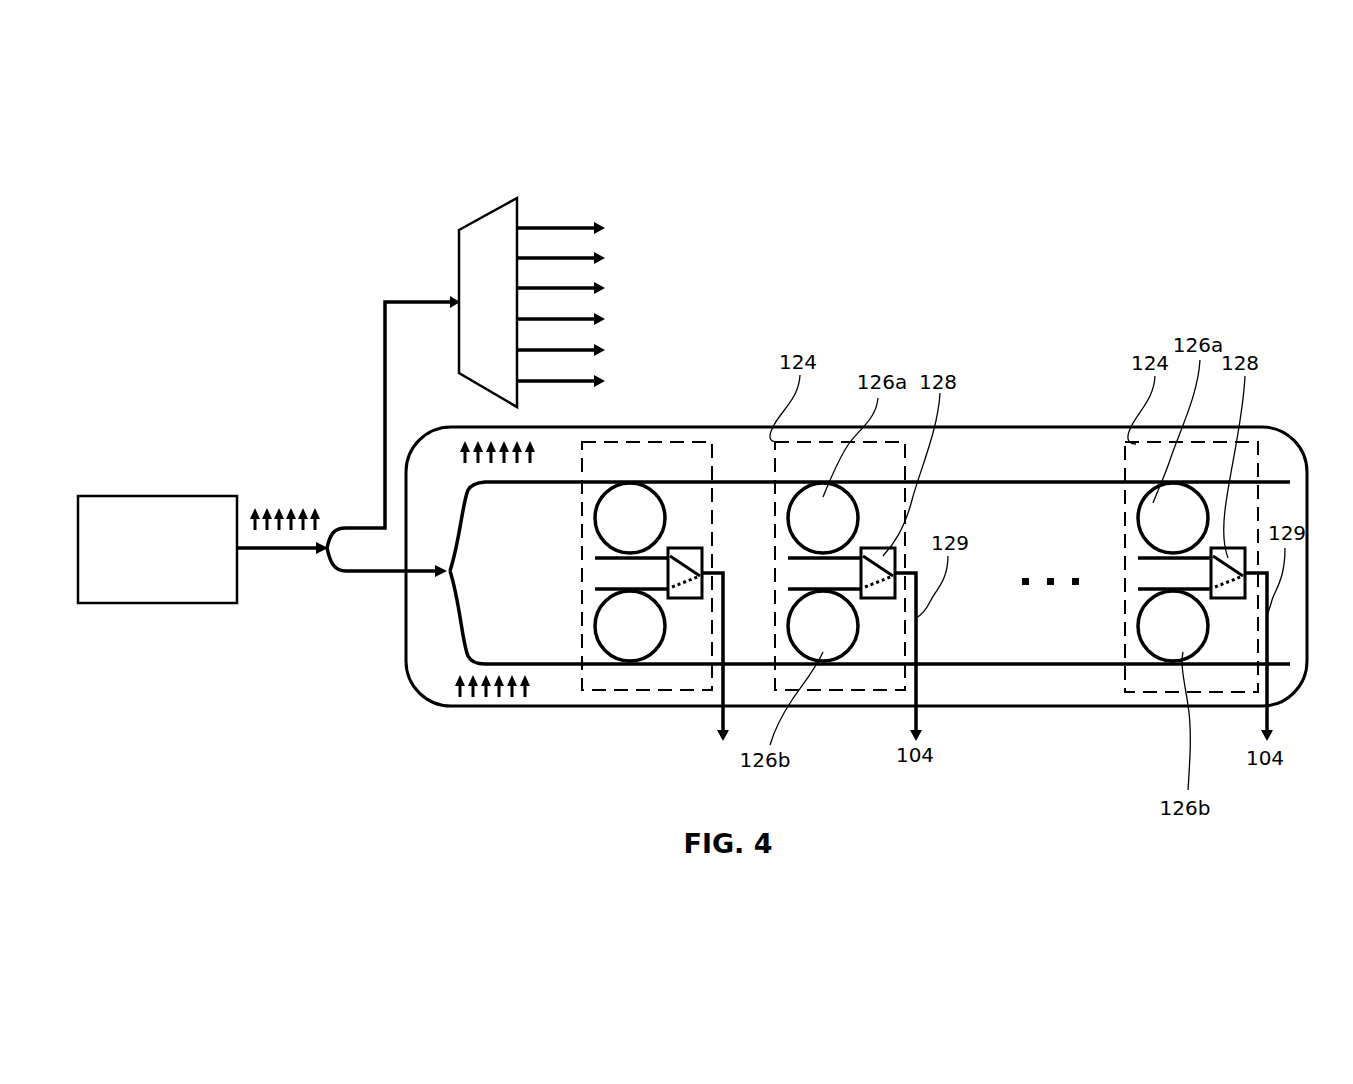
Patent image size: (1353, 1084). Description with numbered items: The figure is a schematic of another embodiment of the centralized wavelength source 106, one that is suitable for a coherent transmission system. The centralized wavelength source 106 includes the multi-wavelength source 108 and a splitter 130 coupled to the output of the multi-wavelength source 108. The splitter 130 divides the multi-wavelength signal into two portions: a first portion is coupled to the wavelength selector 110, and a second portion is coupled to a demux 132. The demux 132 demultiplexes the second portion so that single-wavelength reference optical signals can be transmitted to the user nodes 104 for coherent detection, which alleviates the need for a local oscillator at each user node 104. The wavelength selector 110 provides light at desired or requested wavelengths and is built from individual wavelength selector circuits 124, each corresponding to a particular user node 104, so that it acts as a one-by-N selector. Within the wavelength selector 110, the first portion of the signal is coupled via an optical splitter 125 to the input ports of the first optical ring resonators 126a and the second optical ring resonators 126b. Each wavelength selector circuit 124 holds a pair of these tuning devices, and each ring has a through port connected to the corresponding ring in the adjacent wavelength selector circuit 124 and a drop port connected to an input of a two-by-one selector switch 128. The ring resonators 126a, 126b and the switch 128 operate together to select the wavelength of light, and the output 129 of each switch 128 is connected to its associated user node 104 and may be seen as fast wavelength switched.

The user node 104 is at (590, 304).
The centralized wavelength source 106 is at (1048, 256).
The multi-wavelength source 108 is at (165, 505).
The wavelength selector 110 is at (1268, 448).
The wavelength selector circuit 124 is at (618, 442).
The optical splitter 125 is at (455, 565).
The first optical ring resonator 126a is at (630, 497).
The second optical ring resonator 126b is at (632, 652).
The 2×1 selector switch 128 is at (690, 556).
The output of switch 129 is at (723, 618).
The splitter 130 is at (325, 555).
The demux 132 is at (480, 219).